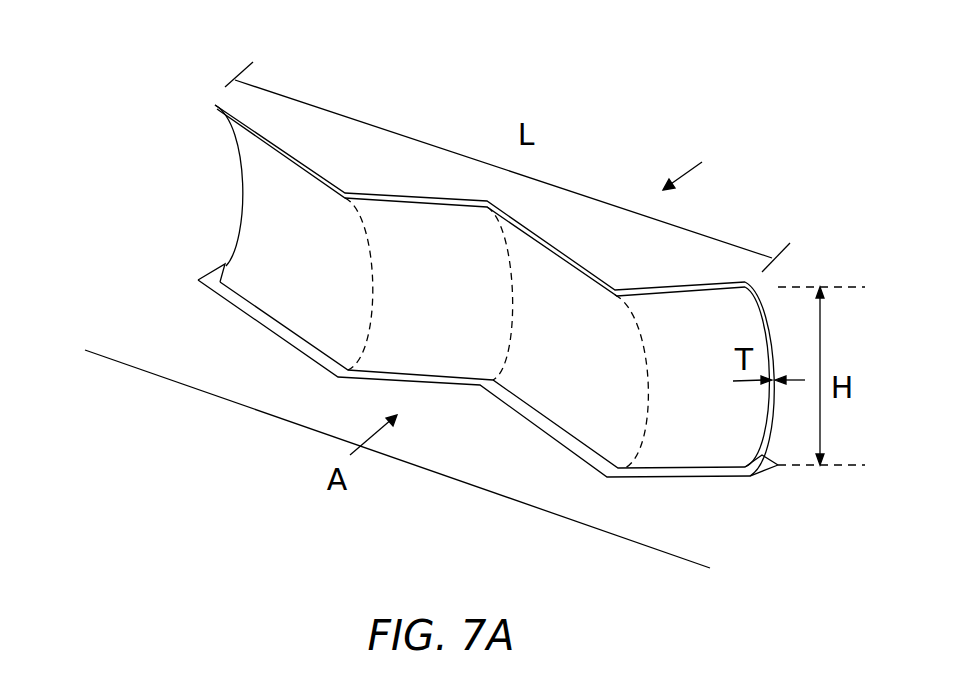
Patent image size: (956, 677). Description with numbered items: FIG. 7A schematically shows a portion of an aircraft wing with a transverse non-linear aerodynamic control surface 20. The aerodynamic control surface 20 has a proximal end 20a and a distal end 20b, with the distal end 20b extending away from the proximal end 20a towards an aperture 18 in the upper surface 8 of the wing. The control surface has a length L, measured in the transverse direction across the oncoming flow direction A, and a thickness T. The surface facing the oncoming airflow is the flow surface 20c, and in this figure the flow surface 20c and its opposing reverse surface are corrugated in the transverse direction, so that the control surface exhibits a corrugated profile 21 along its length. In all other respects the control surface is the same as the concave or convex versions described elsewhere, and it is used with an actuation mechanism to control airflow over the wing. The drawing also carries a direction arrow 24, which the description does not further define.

The upper surface 8 is at (208, 370).
The aperture 18 is at (213, 272).
The aerodynamic control surface 20 is at (243, 148).
The proximal end 20a is at (716, 450).
The distal end 20b is at (217, 102).
The flow surface 20c is at (252, 250).
The corrugated profile 21 is at (590, 442).
The direction arrow 24 is at (701, 160).